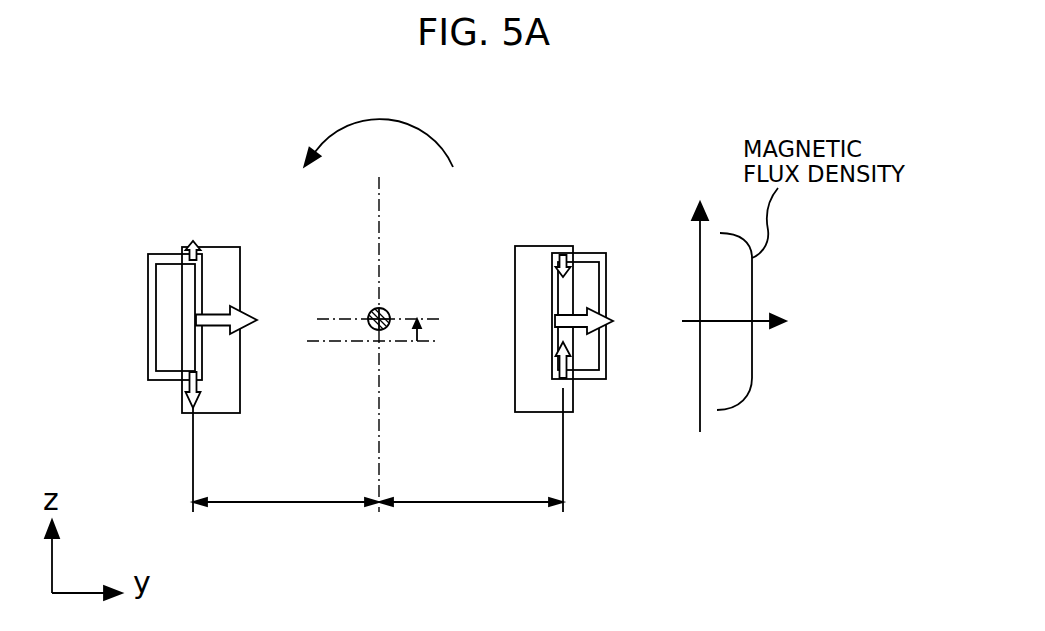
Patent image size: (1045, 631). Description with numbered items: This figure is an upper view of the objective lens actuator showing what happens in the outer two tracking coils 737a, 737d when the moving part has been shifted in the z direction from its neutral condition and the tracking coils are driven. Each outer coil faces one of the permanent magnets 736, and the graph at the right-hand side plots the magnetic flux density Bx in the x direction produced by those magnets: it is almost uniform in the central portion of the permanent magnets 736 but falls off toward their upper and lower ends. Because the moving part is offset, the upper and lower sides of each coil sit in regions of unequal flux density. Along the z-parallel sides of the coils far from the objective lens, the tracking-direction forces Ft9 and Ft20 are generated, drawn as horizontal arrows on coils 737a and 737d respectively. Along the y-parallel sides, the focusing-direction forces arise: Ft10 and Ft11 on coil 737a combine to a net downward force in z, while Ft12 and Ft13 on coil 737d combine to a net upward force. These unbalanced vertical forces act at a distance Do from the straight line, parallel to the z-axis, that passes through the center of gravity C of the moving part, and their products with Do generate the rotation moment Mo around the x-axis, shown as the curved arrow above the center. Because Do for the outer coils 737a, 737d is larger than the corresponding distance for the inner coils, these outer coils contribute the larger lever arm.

The permanent magnet 736 is at (225, 255).
The outer tracking coil 737a is at (148, 307).
The outer tracking coil 737d is at (583, 257).
The electromagnetic force in tracking direction Ft9 is at (253, 327).
The electromagnetic force in focusing direction Ft10 is at (183, 398).
The electromagnetic force in focusing direction Ft11 is at (190, 242).
The electromagnetic force in focusing direction Ft12 is at (555, 367).
The electromagnetic force in focusing direction Ft13 is at (553, 250).
The electromagnetic force in tracking direction Ft20 is at (577, 322).
The center of gravity of the moving part C is at (383, 307).
The rotation moment around x-axis Mo is at (378, 126).
The distance of outer tracking coils Do is at (378, 450).
The magnetic flux density in x direction Bx is at (753, 299).